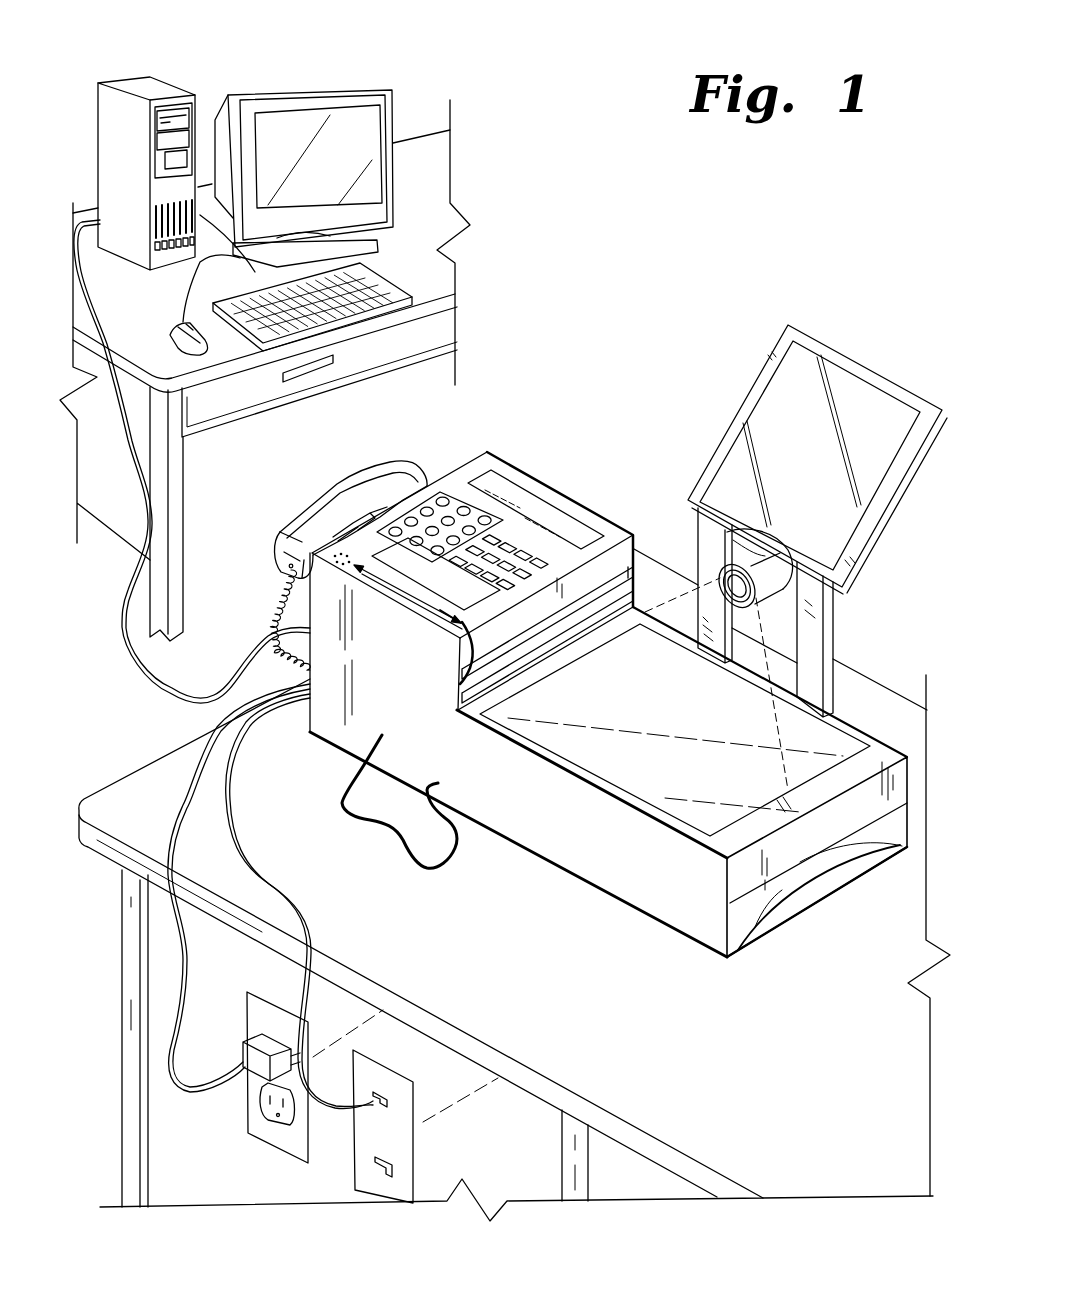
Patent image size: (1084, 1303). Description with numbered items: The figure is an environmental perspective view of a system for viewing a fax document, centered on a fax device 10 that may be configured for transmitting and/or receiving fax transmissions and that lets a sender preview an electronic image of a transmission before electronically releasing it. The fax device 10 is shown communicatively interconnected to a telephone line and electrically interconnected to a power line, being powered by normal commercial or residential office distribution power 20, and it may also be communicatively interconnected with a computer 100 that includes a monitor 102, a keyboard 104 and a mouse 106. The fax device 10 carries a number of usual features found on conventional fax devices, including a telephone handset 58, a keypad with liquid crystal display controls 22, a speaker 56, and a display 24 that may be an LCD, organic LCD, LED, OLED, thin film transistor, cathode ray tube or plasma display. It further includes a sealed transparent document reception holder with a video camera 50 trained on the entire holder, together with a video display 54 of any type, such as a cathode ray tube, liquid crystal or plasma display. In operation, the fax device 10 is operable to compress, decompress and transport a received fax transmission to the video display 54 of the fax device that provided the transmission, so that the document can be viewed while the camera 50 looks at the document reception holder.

The fax device 10 is at (685, 358).
The office distribution power 20 is at (408, 567).
The keypad with liquid crystal display controls 22 is at (415, 563).
The display 24 is at (478, 468).
The video camera 50 is at (833, 627).
The video display 54 is at (815, 460).
The speaker 56 is at (342, 570).
The telephone handset 58 is at (327, 481).
The computer 100 is at (123, 79).
The monitor 102 is at (323, 88).
The keyboard 104 is at (387, 277).
The mouse 106 is at (170, 327).